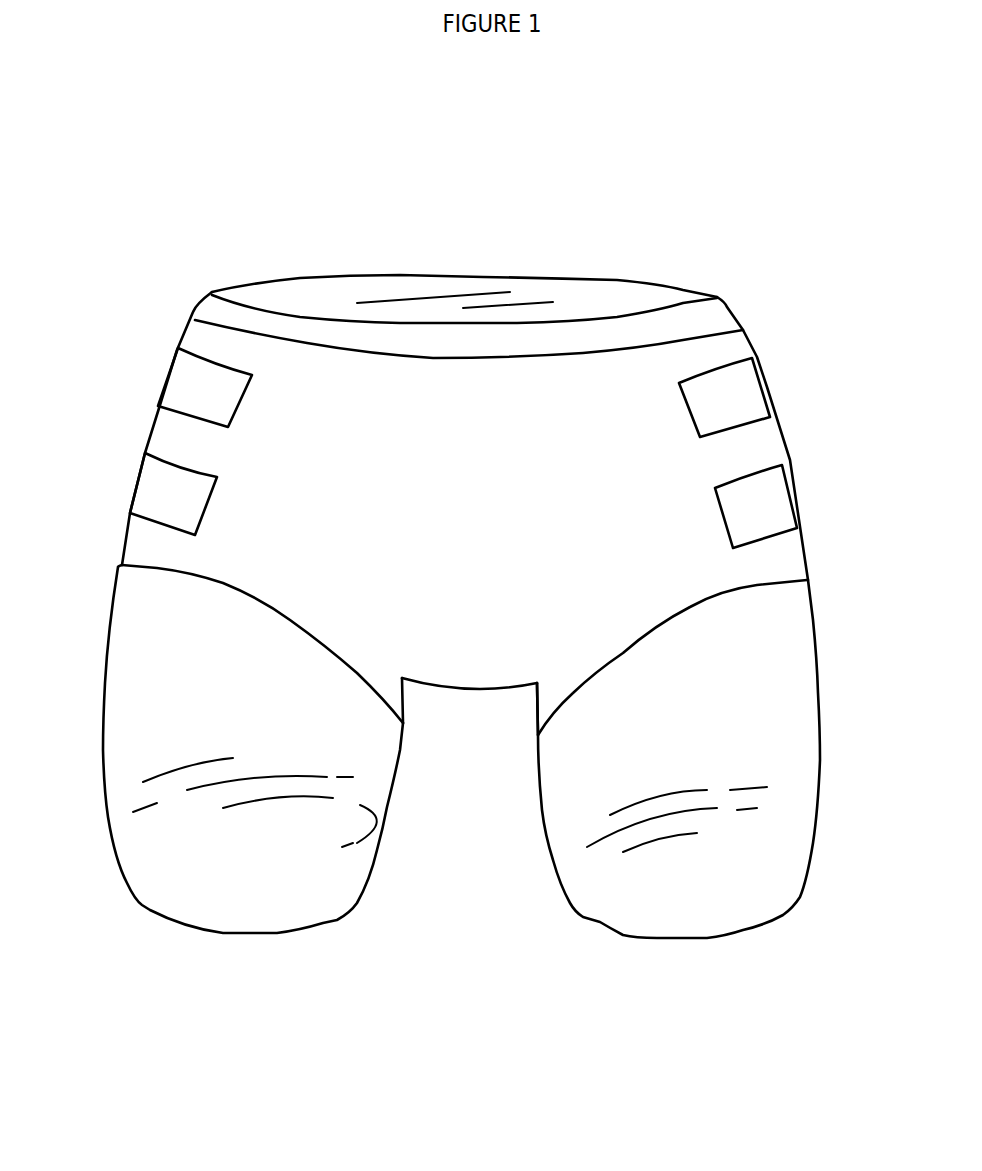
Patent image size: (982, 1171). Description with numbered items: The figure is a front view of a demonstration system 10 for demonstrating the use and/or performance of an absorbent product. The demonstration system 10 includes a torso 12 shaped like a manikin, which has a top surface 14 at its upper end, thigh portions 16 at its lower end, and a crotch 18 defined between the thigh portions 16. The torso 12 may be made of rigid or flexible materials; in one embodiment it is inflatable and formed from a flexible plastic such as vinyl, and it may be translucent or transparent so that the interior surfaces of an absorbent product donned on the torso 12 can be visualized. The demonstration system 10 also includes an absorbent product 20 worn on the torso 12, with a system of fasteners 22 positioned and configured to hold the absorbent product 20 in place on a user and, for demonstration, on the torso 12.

The demonstration system 10 is at (220, 190).
The torso 12 is at (602, 340).
The top surface 14 is at (313, 293).
The thigh portions 16 is at (332, 875).
The crotch 18 is at (445, 703).
The absorbent product 20 is at (452, 520).
The fasteners 22 is at (197, 385).